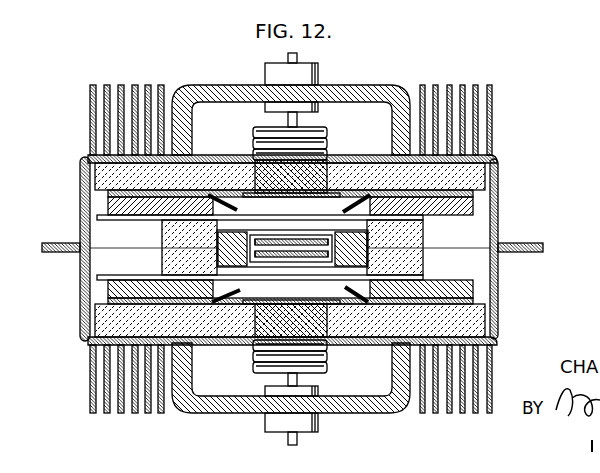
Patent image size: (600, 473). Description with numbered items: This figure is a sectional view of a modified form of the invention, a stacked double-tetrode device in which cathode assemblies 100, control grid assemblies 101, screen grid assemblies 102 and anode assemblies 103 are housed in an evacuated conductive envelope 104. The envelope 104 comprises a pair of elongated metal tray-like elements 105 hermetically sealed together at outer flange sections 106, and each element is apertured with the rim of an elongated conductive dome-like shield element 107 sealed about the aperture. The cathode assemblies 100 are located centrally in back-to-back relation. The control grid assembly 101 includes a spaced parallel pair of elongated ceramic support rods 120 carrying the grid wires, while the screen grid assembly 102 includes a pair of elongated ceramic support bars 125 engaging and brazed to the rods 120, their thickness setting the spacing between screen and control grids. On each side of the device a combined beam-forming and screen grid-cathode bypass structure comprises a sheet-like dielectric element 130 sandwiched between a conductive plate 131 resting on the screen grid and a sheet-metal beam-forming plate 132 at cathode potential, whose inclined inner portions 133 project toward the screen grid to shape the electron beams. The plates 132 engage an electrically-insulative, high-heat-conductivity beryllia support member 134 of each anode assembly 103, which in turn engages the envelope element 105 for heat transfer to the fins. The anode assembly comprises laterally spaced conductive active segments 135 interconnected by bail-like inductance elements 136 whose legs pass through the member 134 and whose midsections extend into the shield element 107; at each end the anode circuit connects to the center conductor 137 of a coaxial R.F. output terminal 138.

The cathode assembly 100 is at (162, 266).
The control grid assembly 101 is at (354, 227).
The screen grid assembly 102 is at (333, 284).
The anode assembly 103 is at (307, 200).
The evacuated conductive envelope 104 is at (185, 82).
The elongated metal tray-like element 105 is at (500, 198).
The outer flange section 106 is at (51, 253).
The dome-like shield element 107 is at (383, 84).
The ceramic support rod 120 is at (222, 248).
The ceramic support bar 125 is at (165, 233).
The sheet-like dielectric element 130 is at (112, 207).
The conductive plate 131 is at (110, 218).
The sheet-metal beam-forming plate 132 is at (117, 195).
The inclined inner portion 133 is at (237, 209).
The insulative support member 134 is at (477, 176).
The anode active segment 135 is at (292, 193).
The bail-like inductance element 136 is at (254, 133).
The center conductor 137 is at (287, 53).
The coaxial R.F. output terminal 138 is at (320, 70).